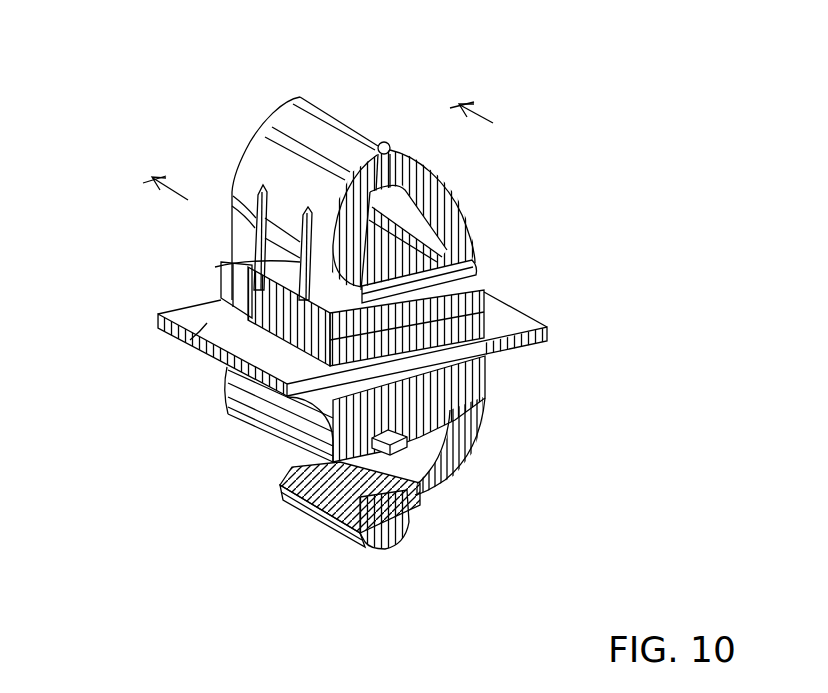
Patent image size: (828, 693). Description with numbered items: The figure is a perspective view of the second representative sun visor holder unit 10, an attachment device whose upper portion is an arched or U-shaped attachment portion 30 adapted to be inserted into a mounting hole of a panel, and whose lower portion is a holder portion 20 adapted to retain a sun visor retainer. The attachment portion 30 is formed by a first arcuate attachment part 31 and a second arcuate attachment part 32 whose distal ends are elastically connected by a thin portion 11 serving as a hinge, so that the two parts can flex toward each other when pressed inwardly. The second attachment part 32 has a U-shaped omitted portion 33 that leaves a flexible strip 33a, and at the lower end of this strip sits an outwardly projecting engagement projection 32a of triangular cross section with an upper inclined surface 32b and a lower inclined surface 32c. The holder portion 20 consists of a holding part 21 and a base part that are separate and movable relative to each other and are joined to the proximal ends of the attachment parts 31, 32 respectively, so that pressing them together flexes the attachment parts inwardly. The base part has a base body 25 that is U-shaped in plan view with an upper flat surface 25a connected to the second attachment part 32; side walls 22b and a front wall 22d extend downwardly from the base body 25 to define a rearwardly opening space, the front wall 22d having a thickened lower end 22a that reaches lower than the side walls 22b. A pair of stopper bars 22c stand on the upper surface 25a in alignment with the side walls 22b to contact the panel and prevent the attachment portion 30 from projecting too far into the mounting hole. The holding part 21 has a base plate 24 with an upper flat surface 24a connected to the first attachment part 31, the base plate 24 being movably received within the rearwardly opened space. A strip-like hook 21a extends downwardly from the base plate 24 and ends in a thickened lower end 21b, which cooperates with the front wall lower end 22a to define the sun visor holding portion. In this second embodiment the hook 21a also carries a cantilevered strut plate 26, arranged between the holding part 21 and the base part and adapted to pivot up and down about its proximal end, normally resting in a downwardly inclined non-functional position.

The sun visor holder unit 10 is at (333, 100).
The thin portion 11 is at (383, 141).
The holder portion 20 is at (230, 421).
The holding part 21 is at (465, 445).
The hook 21a is at (437, 470).
The thickened lower end 21b is at (400, 447).
The thickened lower end 22a is at (290, 502).
The side walls 22b is at (467, 378).
The stopper bars 22c is at (470, 340).
The front wall 22d is at (277, 420).
The base plate 24 is at (500, 308).
The upper flat surface 24a is at (505, 302).
The base body 25 is at (527, 327).
The upper flat surface 25a is at (207, 323).
The strut plate 26 is at (405, 452).
The attachment portion 30 is at (482, 236).
The first arcuate attachment part 31 is at (450, 205).
The second arcuate attachment part 32 is at (257, 152).
The engagement projection 32a is at (216, 275).
The upper inclined surface 32b is at (270, 222).
The lower inclined surface 32c is at (217, 298).
The U-shaped omitted portion 33 is at (259, 186).
The flexible strip 33a is at (247, 213).